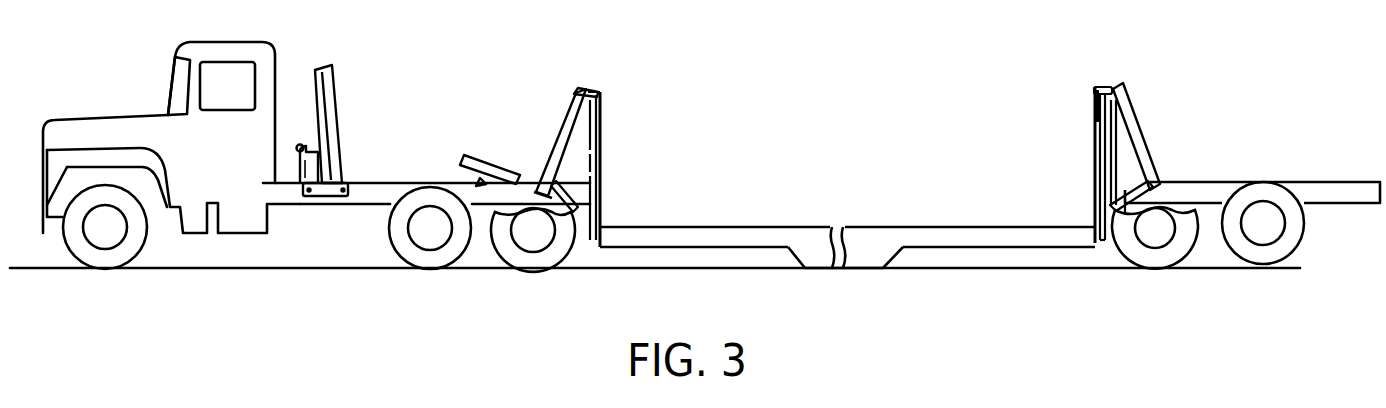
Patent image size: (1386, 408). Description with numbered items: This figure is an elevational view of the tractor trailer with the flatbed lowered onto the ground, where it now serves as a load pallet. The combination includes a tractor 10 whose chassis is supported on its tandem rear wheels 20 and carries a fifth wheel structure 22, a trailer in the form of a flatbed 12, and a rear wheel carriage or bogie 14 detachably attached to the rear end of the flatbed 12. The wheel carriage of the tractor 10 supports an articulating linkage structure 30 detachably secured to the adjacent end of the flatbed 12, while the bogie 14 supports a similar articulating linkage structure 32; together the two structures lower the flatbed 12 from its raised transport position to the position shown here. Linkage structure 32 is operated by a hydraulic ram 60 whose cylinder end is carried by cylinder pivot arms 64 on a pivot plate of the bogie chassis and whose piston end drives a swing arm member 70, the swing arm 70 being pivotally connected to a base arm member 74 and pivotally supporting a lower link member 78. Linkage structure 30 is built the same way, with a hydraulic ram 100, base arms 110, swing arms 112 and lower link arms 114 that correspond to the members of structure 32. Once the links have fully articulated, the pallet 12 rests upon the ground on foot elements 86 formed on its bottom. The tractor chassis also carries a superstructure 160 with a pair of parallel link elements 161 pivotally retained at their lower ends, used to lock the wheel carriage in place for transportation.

The tractor 10 is at (138, 84).
The flatbed 12 is at (990, 237).
The rear wheel carriage or bogie 14 is at (1246, 241).
The rear wheels 20 is at (393, 232).
The fifth wheel structure 22 is at (483, 153).
The articulating linkage structure 30 is at (570, 155).
The articulating linkage structure 32 is at (1130, 156).
The hydraulic ram 60 is at (1118, 157).
The cylinder pivot arms 64 is at (1133, 213).
The swing arm member 70 is at (1094, 148).
The base arm member 74 is at (1133, 107).
The lower link member 78 is at (1098, 203).
The foot elements 86 is at (817, 257).
The hydraulic ram 100 is at (627, 169).
The base arms 110 is at (547, 153).
The swing arms 112 is at (595, 140).
The lower link arms 114 is at (594, 188).
The superstructure 160 is at (356, 110).
The link elements 161 is at (330, 128).